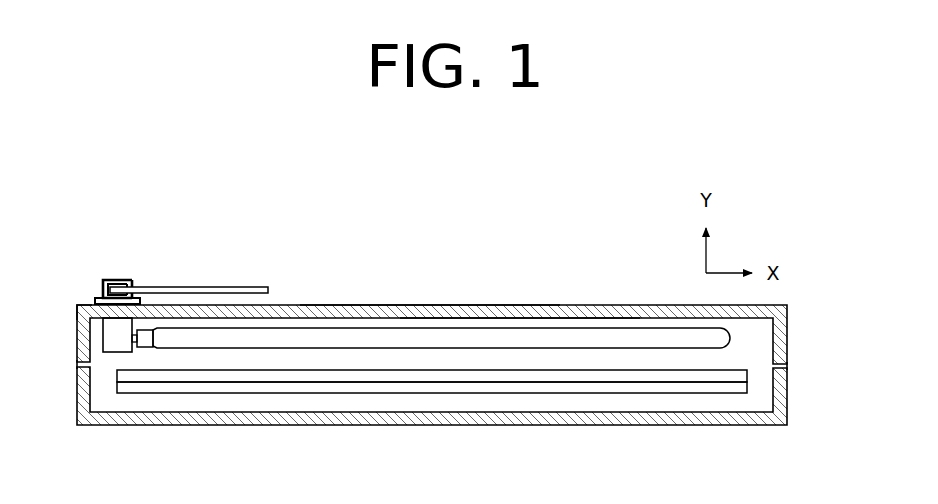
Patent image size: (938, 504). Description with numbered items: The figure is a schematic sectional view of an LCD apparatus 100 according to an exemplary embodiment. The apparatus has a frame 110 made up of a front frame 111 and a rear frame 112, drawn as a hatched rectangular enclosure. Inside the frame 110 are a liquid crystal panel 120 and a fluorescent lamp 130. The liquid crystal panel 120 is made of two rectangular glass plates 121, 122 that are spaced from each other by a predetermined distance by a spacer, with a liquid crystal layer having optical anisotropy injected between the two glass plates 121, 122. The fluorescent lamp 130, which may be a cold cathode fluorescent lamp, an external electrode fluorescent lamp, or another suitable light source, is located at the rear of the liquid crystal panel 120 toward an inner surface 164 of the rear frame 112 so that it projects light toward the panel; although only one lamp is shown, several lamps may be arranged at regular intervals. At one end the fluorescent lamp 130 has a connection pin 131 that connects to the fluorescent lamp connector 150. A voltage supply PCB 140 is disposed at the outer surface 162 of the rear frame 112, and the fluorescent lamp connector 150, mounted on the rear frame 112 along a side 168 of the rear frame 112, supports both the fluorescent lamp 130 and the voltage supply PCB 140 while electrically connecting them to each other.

The LCD apparatus 100 is at (632, 242).
The frame 110 is at (491, 365).
The front frame 111 is at (467, 396).
The rear frame 112 is at (783, 337).
The liquid crystal panel 120 is at (387, 418).
The glass plate 121 is at (117, 392).
The glass plate 122 is at (117, 371).
The fluorescent lamp 130 is at (351, 316).
The connection pin 131 is at (103, 328).
The voltage supply PCB 140 is at (222, 288).
The fluorescent lamp connector 150 is at (99, 268).
The outer surface 162 is at (430, 305).
The inner surface 164 is at (511, 318).
The side 168 is at (77, 307).